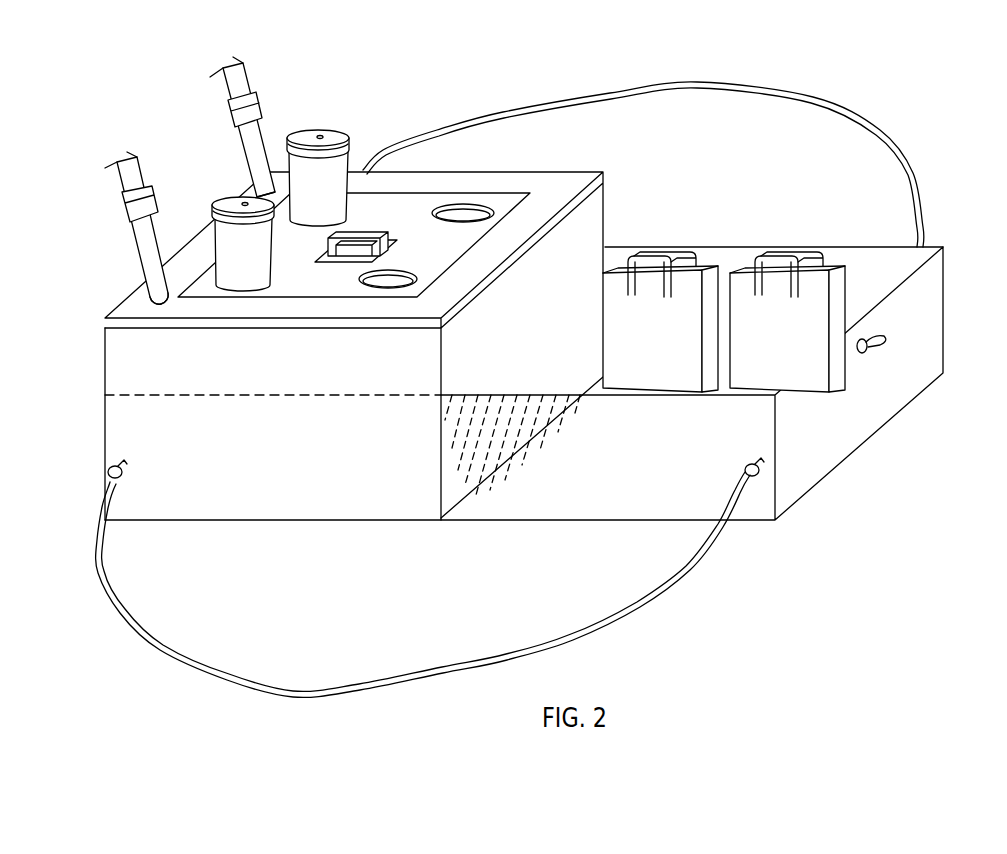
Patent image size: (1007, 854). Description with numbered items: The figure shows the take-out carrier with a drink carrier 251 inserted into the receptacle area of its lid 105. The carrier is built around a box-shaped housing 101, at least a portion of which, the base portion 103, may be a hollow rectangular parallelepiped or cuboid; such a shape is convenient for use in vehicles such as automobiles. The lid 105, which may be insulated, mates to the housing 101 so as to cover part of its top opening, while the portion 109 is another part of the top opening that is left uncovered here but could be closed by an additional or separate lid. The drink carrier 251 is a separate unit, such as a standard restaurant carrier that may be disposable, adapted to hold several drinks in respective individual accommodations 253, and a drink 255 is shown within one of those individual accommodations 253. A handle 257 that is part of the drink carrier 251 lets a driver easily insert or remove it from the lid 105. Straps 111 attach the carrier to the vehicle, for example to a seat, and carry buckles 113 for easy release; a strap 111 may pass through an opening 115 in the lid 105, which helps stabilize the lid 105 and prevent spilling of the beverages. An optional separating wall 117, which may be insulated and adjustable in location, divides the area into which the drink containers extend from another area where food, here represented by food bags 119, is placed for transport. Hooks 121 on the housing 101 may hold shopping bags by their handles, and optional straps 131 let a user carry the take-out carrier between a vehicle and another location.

The housing 101 is at (597, 483).
The base portion 103 is at (382, 497).
The lid 105 is at (227, 305).
The portion 109 is at (897, 258).
The strap 111 is at (148, 260).
The buckle 113 is at (125, 208).
The opening 115 is at (150, 290).
The separating wall 117 is at (572, 373).
The food bag 119 is at (643, 290).
The hook 121 is at (877, 340).
The strap 131 is at (870, 130).
The drink carrier 251 is at (393, 210).
The individual accommodation 253 is at (465, 210).
The drink 255 is at (250, 203).
The handle 257 is at (347, 253).